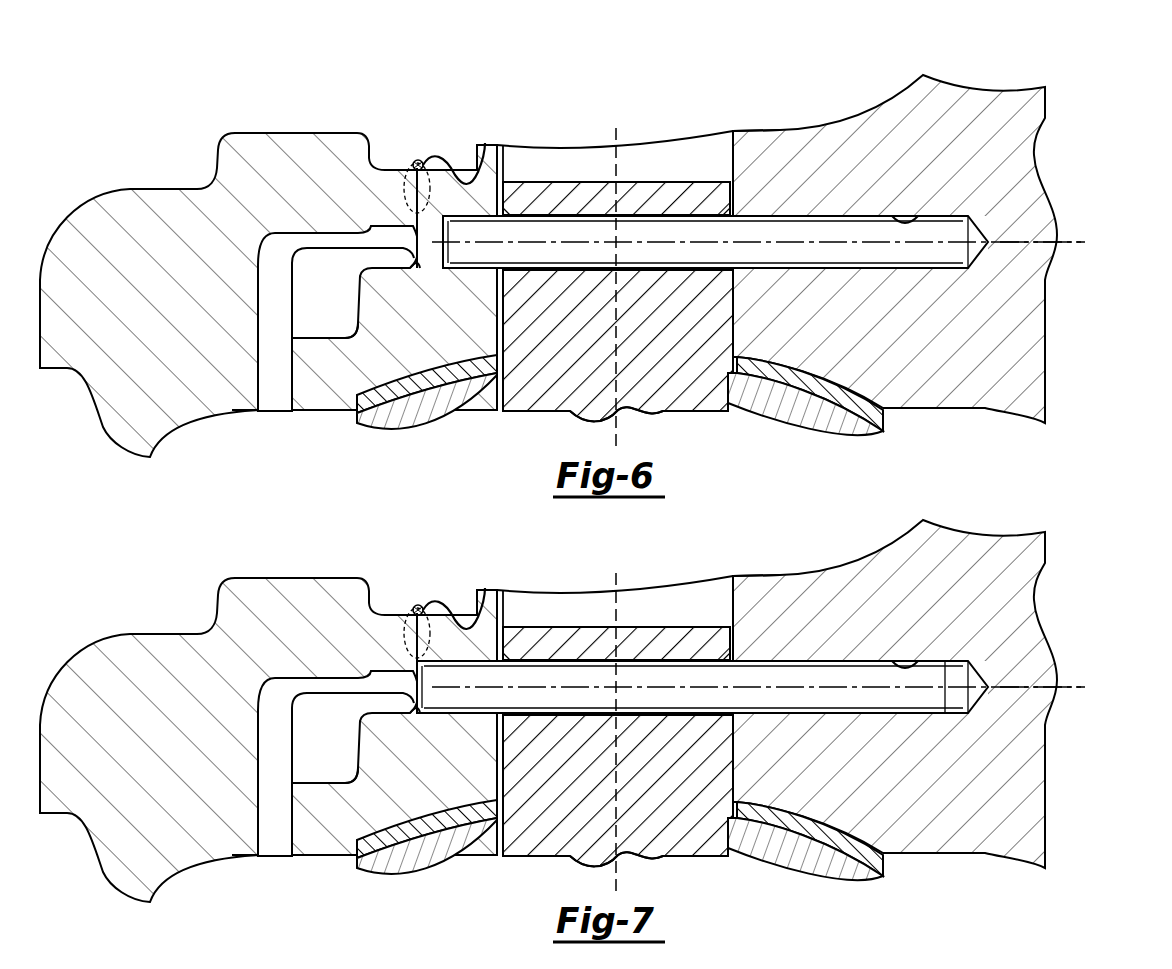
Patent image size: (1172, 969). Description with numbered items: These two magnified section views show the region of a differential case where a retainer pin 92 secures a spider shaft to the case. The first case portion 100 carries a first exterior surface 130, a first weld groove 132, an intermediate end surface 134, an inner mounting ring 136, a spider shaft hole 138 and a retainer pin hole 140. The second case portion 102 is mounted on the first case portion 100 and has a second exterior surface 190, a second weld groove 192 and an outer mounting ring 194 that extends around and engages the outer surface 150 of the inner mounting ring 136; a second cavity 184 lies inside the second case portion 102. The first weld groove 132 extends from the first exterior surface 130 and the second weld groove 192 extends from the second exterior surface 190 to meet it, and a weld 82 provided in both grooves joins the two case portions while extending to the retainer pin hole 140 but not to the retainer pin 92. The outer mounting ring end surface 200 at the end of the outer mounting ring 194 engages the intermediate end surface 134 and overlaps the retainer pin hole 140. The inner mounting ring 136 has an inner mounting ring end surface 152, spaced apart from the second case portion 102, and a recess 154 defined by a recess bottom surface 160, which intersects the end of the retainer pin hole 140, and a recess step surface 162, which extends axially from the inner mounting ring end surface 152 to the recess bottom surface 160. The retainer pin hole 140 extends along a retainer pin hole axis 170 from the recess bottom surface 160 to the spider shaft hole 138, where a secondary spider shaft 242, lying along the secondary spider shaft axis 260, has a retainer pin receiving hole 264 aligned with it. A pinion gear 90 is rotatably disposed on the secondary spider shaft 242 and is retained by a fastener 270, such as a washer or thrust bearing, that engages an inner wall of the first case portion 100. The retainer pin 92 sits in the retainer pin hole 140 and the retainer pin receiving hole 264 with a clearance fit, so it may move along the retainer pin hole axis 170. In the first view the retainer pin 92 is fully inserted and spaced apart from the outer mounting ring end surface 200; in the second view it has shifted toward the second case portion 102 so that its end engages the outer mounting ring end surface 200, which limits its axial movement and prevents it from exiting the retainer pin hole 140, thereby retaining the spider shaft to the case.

In FIG. 6, the weld 82 is at (421, 159).
In FIG. 7, the weld 82 is at (443, 574).
In FIG. 6, the pinion gear 90 is at (443, 405).
In FIG. 7, the pinion gear 90 is at (427, 861).
In FIG. 6, the retainer pin 92 is at (832, 254).
In FIG. 7, the retainer pin 92 is at (758, 689).
In FIG. 6, the first case portion 100 is at (870, 110).
In FIG. 7, the first case portion 100 is at (895, 676).
In FIG. 6, the second case portion 102 is at (255, 126).
In FIG. 7, the second case portion 102 is at (268, 699).
In FIG. 6, the first exterior surface 130 is at (770, 129).
In FIG. 7, the first exterior surface 130 is at (756, 545).
In FIG. 6, the first weld groove 132 is at (498, 162).
In FIG. 7, the first weld groove 132 is at (520, 691).
In FIG. 6, the intermediate end surface 134 is at (424, 188).
In FIG. 7, the intermediate end surface 134 is at (702, 673).
In FIG. 6, the inner mounting ring 136 is at (292, 341).
In FIG. 7, the inner mounting ring 136 is at (338, 763).
In FIG. 6, the spider shaft hole 138 is at (657, 134).
In FIG. 7, the spider shaft hole 138 is at (615, 698).
In FIG. 6, the retainer pin hole 140 is at (918, 216).
In FIG. 7, the retainer pin hole 140 is at (680, 684).
In FIG. 6, the outer surface 150 is at (320, 232).
In FIG. 7, the outer surface 150 is at (315, 567).
In FIG. 6, the inner mounting ring end surface 152 is at (287, 404).
In FIG. 7, the inner mounting ring end surface 152 is at (321, 874).
In FIG. 6, the recess 154 is at (296, 252).
In FIG. 7, the recess 154 is at (280, 676).
In FIG. 6, the recess bottom surface 160 is at (357, 300).
In FIG. 7, the recess bottom surface 160 is at (353, 774).
In FIG. 6, the recess step surface 162 is at (312, 338).
In FIG. 7, the recess step surface 162 is at (308, 767).
In FIG. 6, the retainer pin hole axis 170 is at (1072, 242).
In FIG. 7, the retainer pin hole axis 170 is at (1065, 665).
In FIG. 6, the second cavity 184 is at (263, 418).
In FIG. 7, the second cavity 184 is at (250, 882).
In FIG. 6, the second exterior surface 190 is at (303, 131).
In FIG. 7, the second exterior surface 190 is at (286, 523).
In FIG. 6, the second weld groove 192 is at (396, 152).
In FIG. 7, the second weld groove 192 is at (431, 553).
In FIG. 6, the outer mounting ring 194 is at (420, 148).
In FIG. 7, the outer mounting ring 194 is at (431, 569).
In FIG. 6, the outer mounting ring end surface 200 is at (411, 208).
In FIG. 7, the outer mounting ring end surface 200 is at (380, 633).
In FIG. 6, the secondary spider shaft 242 is at (563, 181).
In FIG. 7, the secondary spider shaft 242 is at (616, 603).
In FIG. 6, the secondary spider shaft axis 260 is at (618, 135).
In FIG. 7, the secondary spider shaft axis 260 is at (638, 704).
In FIG. 6, the retainer pin receiving hole 264 is at (611, 264).
In FIG. 7, the retainer pin receiving hole 264 is at (629, 784).
In FIG. 6, the fastener 270 is at (802, 390).
In FIG. 7, the fastener 270 is at (805, 856).